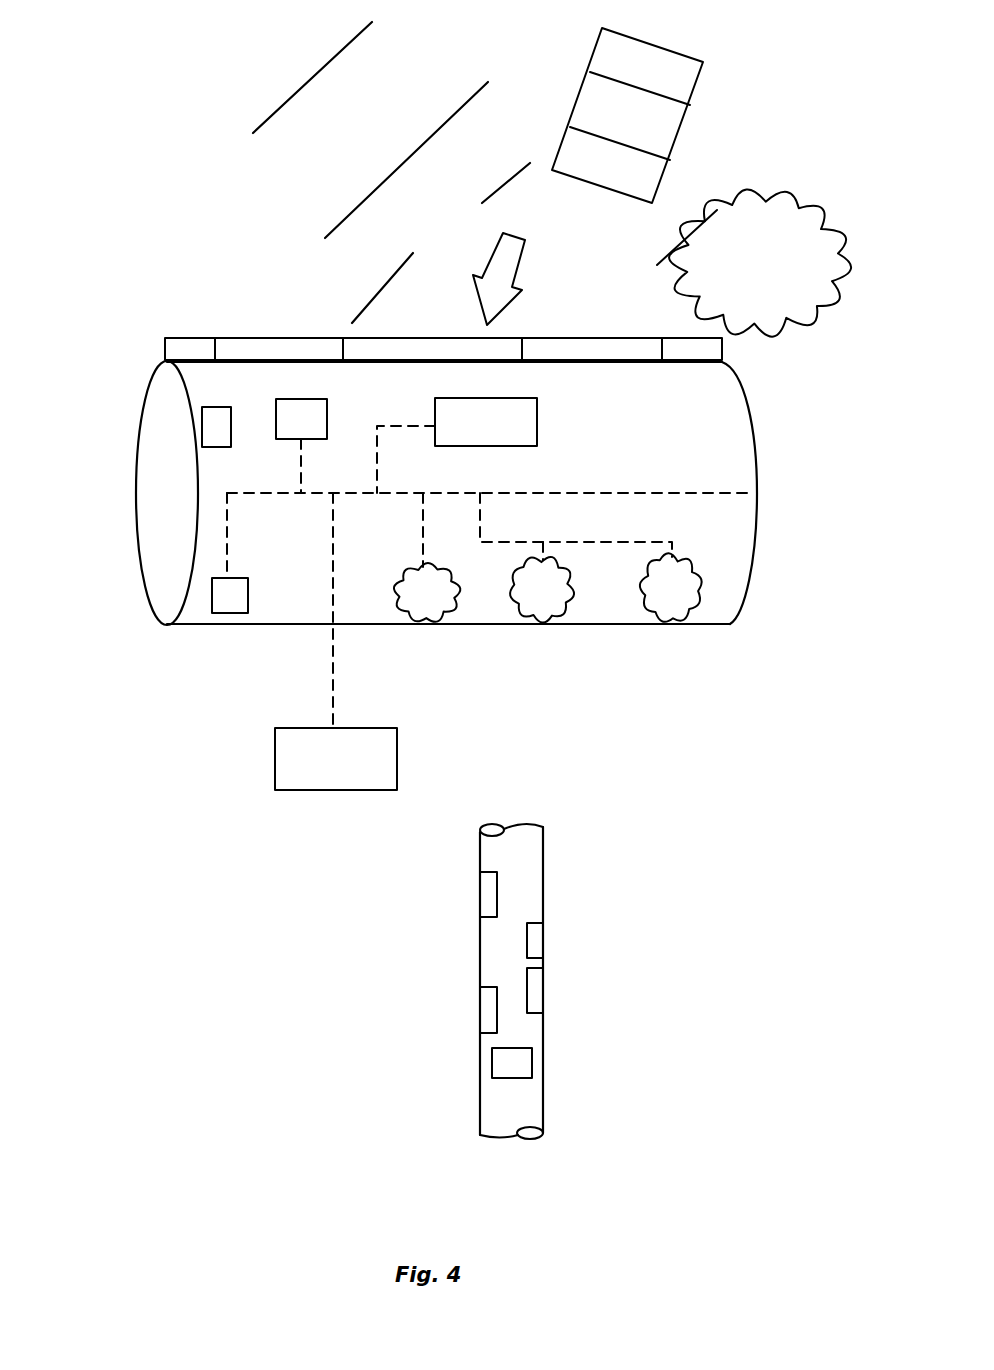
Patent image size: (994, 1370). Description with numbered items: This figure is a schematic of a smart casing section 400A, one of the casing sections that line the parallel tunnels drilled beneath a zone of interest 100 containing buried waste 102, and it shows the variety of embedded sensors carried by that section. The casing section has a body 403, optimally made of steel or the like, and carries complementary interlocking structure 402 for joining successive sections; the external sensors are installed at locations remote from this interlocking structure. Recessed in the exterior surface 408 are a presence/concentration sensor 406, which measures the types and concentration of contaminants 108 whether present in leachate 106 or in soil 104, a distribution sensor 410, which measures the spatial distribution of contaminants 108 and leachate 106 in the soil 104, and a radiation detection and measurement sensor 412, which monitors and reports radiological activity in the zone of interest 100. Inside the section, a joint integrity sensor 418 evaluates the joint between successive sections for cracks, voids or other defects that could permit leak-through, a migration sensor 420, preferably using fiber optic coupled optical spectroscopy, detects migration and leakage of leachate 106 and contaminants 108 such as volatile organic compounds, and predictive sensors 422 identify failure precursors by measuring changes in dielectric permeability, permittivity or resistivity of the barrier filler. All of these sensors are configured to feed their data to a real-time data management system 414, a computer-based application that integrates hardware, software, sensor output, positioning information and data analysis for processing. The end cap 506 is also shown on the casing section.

The zone of interest 100 is at (250, 237).
The buried waste 102 is at (680, 147).
The soil 104 is at (391, 172).
The leachate 106 is at (521, 279).
The contaminants 108 is at (754, 262).
The smart casing section 400A is at (523, 748).
The complementary interlocking structure 402 is at (165, 348).
The body 403 is at (720, 469).
The presence/concentration sensor 406 is at (540, 623).
The exterior surface 408 is at (495, 945).
The distribution sensor 410 is at (662, 623).
The radiation detection and measurement sensor 412 is at (428, 623).
The real-time data management system 414 is at (275, 755).
The joint integrity sensor 418 is at (213, 427).
The migration sensor 420 is at (520, 423).
The predictive sensor 422 is at (301, 416).
The end cap 506 is at (172, 503).